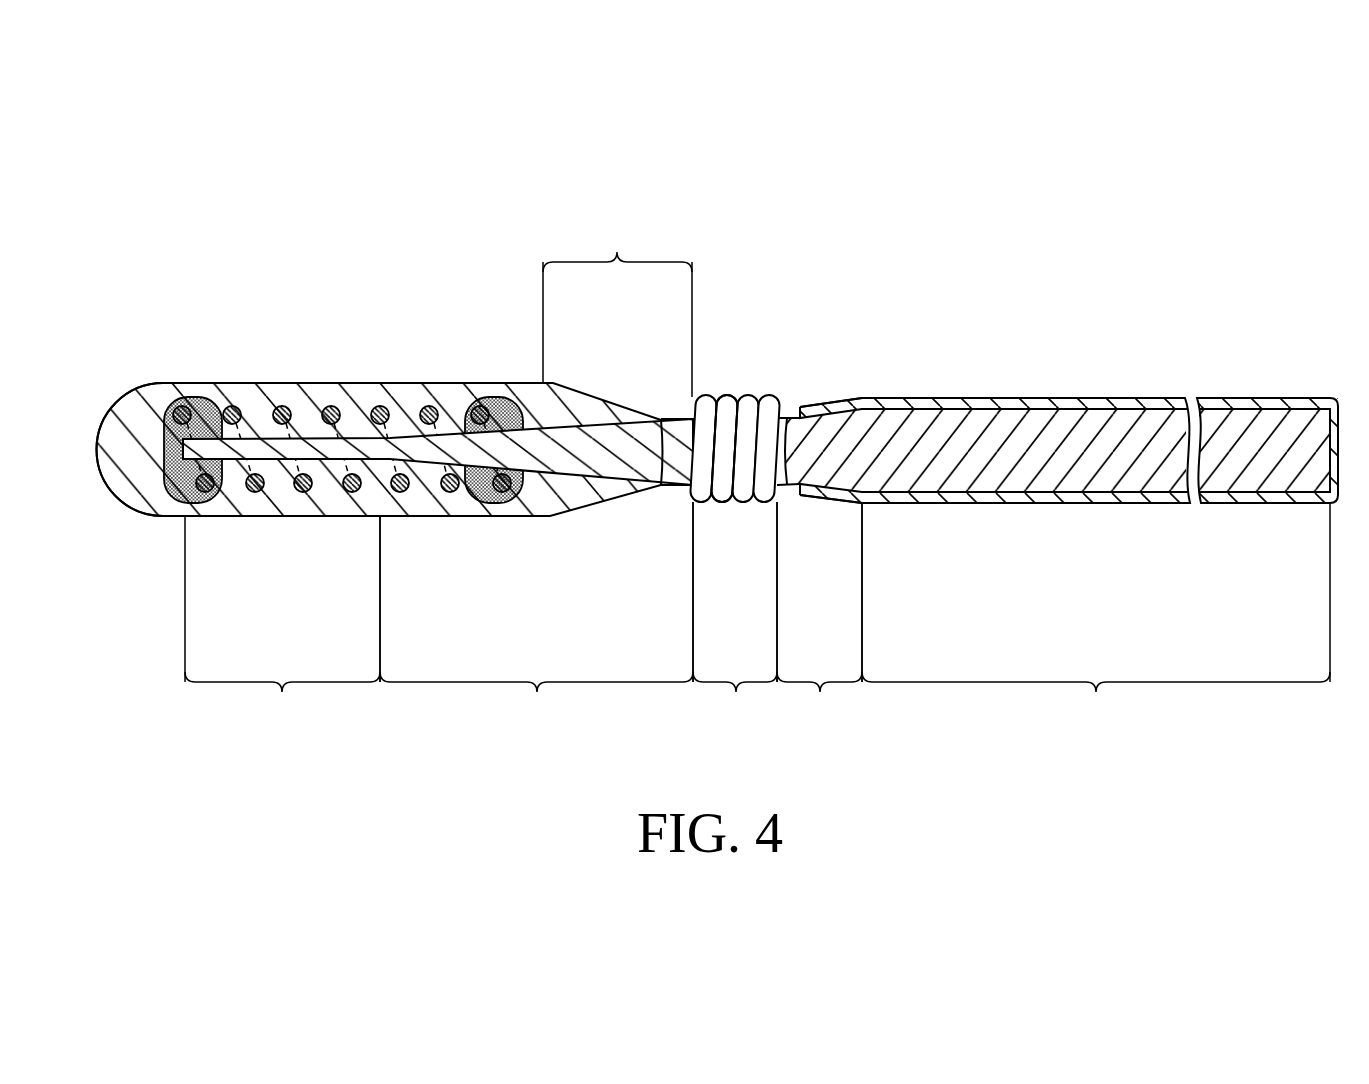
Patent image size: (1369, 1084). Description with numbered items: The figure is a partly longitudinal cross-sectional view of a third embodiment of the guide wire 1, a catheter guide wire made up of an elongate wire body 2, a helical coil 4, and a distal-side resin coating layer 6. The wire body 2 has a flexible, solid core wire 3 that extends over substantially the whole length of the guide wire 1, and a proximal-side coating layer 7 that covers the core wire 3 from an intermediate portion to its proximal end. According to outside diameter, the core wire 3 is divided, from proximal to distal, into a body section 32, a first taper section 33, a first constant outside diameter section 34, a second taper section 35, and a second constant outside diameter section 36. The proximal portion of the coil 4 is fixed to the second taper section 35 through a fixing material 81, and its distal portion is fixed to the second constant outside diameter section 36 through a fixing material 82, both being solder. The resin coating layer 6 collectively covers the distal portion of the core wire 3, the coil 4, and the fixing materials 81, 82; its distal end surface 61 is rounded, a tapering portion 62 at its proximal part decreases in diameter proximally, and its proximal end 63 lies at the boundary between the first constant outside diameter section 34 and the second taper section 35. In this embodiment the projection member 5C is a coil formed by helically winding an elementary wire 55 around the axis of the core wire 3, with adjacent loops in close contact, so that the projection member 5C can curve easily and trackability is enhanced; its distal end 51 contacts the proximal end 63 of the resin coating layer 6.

The guide wire 1 is at (1029, 233).
The wire body 2 is at (1061, 394).
The core wire 3 is at (993, 427).
The coil 4 is at (427, 437).
The projection member 5C is at (757, 390).
The resin coating layer 6 is at (355, 420).
The coating layer 7 is at (1050, 504).
The body section 32 is at (1096, 613).
The first taper section 33 is at (819, 612).
The first constant outside diameter section 34 is at (735, 612).
The second taper section 35 is at (536, 612).
The second constant outside diameter section 36 is at (282, 619).
The distal end of the projection member 51 is at (690, 400).
The elementary wire 55 is at (730, 396).
The distal end surface 61 is at (95, 452).
The tapering portion 62 is at (617, 312).
The proximal end of the resin coating layer 63 is at (677, 452).
The fixing material 81 is at (487, 398).
The fixing material 82 is at (203, 398).